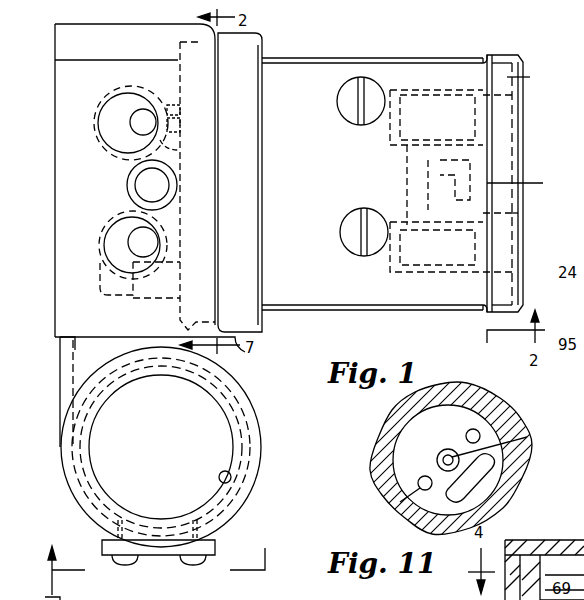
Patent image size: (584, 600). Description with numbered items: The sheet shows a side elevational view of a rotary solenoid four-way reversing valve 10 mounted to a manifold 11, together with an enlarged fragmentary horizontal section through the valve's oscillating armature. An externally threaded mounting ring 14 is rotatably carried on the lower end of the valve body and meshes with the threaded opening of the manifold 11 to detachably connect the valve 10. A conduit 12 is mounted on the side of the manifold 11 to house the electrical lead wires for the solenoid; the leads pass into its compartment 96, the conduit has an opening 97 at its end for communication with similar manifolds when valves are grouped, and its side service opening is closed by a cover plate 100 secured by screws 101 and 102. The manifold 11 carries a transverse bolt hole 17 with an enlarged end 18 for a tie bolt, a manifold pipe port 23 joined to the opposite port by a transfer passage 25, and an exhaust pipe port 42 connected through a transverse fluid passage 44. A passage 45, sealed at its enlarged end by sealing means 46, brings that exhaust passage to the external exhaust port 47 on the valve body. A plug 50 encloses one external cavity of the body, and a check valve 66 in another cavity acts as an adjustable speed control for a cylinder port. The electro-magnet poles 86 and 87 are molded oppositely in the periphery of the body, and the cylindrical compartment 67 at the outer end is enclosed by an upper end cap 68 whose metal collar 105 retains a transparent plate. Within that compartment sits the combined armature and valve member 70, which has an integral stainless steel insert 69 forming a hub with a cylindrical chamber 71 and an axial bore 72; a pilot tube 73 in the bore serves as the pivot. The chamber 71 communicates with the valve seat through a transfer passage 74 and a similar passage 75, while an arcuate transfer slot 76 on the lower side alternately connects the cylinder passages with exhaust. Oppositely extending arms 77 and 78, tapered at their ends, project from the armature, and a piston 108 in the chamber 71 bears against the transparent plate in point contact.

In FIG. 1, the valve 10 is at (378, 58).
In FIG. 1, the manifold 11 is at (66, 23).
In FIG. 1, the conduit 12 is at (256, 402).
In FIG. 1, the mounting plate 14 is at (262, 44).
In FIG. 1, the transverse bolt hole 17 is at (140, 173).
In FIG. 1, the enlarged end of bolt hole 18 is at (138, 190).
In FIG. 1, the manifold pipe port 23 is at (106, 247).
In FIG. 1, the transfer passage 25 is at (136, 231).
In FIG. 1, the exhaust pipe port 42 is at (112, 108).
In FIG. 1, the transverse fluid passage 44 is at (135, 110).
In FIG. 1, the passage 45 is at (176, 150).
In FIG. 1, the sealing means 46 is at (176, 108).
In FIG. 1, the external exhaust port 47 is at (176, 126).
In FIG. 1, the plug 50 is at (336, 106).
In FIG. 1, the check valve 66 is at (338, 234).
In FIG. 1, the cylindrical compartment 67 is at (472, 92).
In FIG. 1, the upper end cap 68 is at (522, 50).
In FIG. 1, the insert 69 is at (520, 212).
In FIG. 11, the insert 69 is at (496, 474).
In FIG. 1, the armature member 70 is at (392, 268).
In FIG. 11, the armature member 70 is at (528, 450).
In FIG. 1, the cylindrical chamber 71 is at (472, 172).
In FIG. 11, the axial bore 72 is at (438, 459).
In FIG. 11, the pilot tube 73 is at (528, 436).
In FIG. 11, the transfer passage 74 is at (467, 432).
In FIG. 11, the passage 75 is at (390, 505).
In FIG. 11, the arcuate transfer slot 76 is at (495, 490).
In FIG. 11, the arm 77 is at (505, 418).
In FIG. 11, the arm 78 is at (374, 476).
In FIG. 1, the pole 86 is at (410, 310).
In FIG. 1, the pole 87 is at (434, 60).
In FIG. 1, the compartment 96 is at (222, 459).
In FIG. 1, the opening 97 is at (238, 482).
In FIG. 1, the cover plate 100 is at (218, 547).
In FIG. 1, the screw 101 is at (203, 565).
In FIG. 1, the screw 102 is at (126, 562).
In FIG. 1, the metal collar 105 is at (534, 77).
In FIG. 1, the piston 108 is at (530, 184).